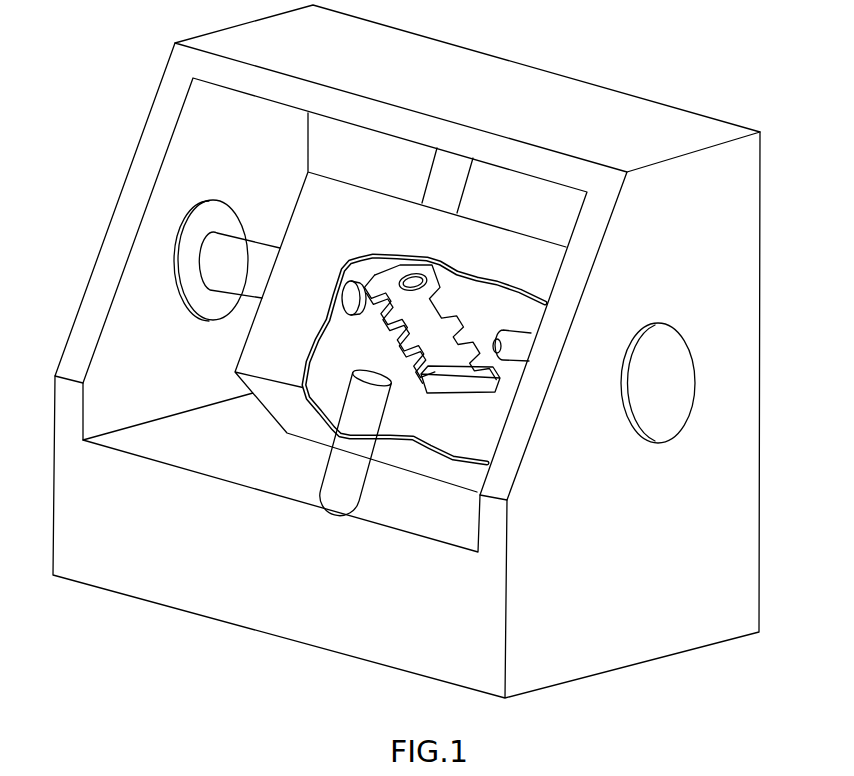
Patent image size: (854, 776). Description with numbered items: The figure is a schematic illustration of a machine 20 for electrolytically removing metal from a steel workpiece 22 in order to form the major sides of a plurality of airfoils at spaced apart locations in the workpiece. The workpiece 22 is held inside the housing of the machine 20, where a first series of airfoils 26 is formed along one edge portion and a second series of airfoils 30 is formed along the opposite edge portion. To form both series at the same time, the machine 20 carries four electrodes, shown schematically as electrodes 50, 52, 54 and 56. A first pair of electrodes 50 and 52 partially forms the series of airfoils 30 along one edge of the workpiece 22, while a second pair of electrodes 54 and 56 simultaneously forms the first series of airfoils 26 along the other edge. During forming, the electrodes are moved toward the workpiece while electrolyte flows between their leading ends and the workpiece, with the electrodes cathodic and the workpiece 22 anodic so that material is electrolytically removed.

The machine 20 is at (700, 103).
The workpiece 22 is at (362, 333).
The first series of airfoils 26 is at (465, 337).
The second series of airfoils 30 is at (412, 404).
The electrode 50 is at (375, 420).
The electrode 52 is at (348, 303).
The electrode 54 is at (456, 229).
The electrode 56 is at (520, 343).